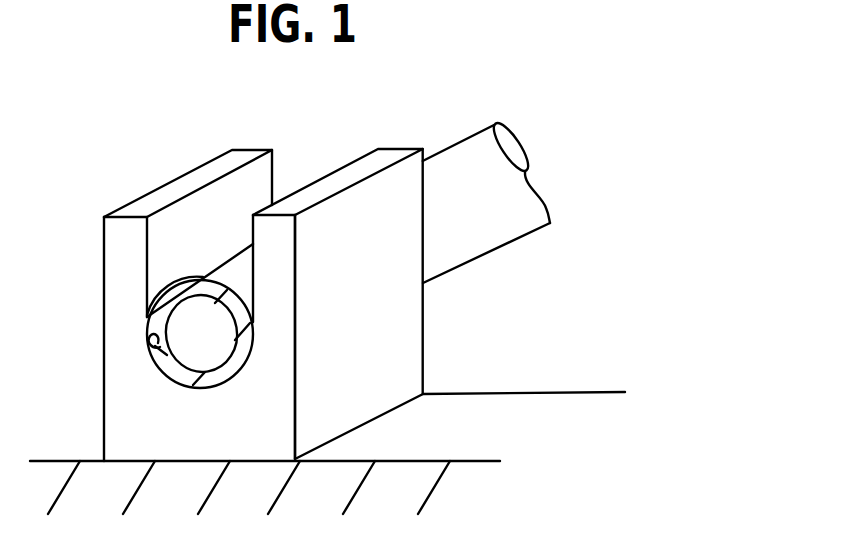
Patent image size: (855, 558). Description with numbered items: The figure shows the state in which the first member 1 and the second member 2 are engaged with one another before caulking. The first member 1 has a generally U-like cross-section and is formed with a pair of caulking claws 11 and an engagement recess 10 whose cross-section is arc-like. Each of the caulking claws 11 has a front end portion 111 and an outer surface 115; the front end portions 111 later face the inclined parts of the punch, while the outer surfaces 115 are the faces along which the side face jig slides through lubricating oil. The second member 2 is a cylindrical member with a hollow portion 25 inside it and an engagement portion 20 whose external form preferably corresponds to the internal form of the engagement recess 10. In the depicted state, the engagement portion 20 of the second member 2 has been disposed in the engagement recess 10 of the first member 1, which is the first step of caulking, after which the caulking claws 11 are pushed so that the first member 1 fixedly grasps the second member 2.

The first member 1 is at (404, 371).
The second member 2 is at (471, 168).
The engagement recess 10 is at (177, 417).
The caulking claws 11 is at (300, 274).
The front end portions 111 is at (205, 173).
The outer surfaces 115 is at (350, 285).
The engagement portion 20 is at (230, 373).
The hollow portion 25 is at (197, 333).